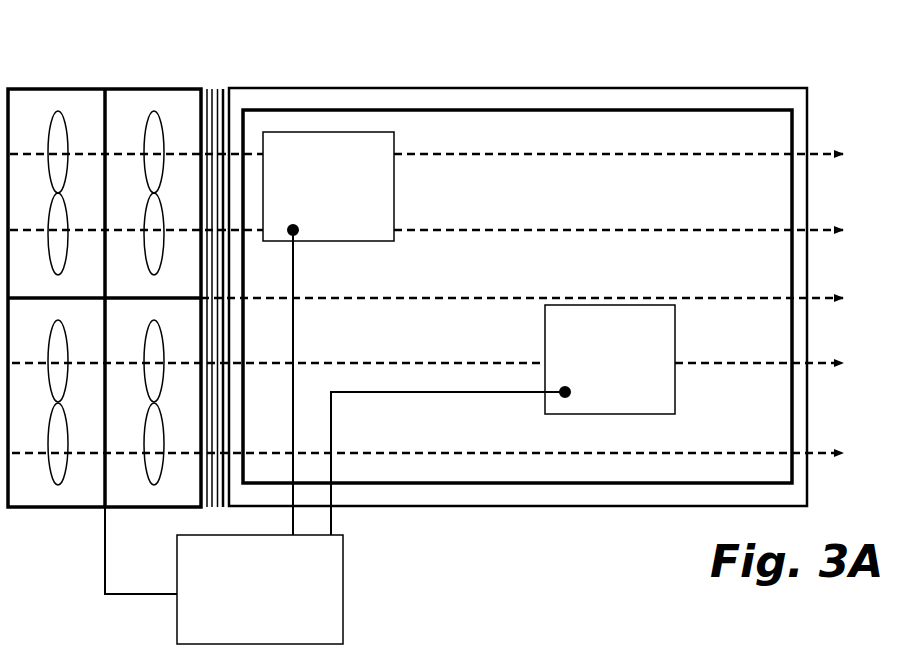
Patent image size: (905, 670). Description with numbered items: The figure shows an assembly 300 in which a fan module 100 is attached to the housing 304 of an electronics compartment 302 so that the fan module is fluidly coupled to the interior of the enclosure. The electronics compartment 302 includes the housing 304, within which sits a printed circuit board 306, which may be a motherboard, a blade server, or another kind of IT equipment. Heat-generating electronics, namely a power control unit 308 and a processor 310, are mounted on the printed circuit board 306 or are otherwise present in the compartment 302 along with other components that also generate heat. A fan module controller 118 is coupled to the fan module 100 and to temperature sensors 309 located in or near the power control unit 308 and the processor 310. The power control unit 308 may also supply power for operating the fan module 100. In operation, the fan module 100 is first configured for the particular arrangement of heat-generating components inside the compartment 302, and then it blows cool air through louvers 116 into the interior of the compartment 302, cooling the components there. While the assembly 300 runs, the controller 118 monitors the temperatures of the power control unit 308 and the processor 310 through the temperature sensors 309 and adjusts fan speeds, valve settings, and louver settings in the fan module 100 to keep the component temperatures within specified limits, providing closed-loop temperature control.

The fan module 100 is at (105, 86).
The louvers 116 is at (218, 88).
The fan module controller 118 is at (224, 575).
The assembly 300 is at (733, 62).
The electronics compartment 302 is at (487, 84).
The housing 304 is at (683, 492).
The printed circuit board 306 is at (565, 125).
The power control unit 308 is at (328, 186).
The temperature sensors 309 is at (293, 230).
The processor 310 is at (610, 359).